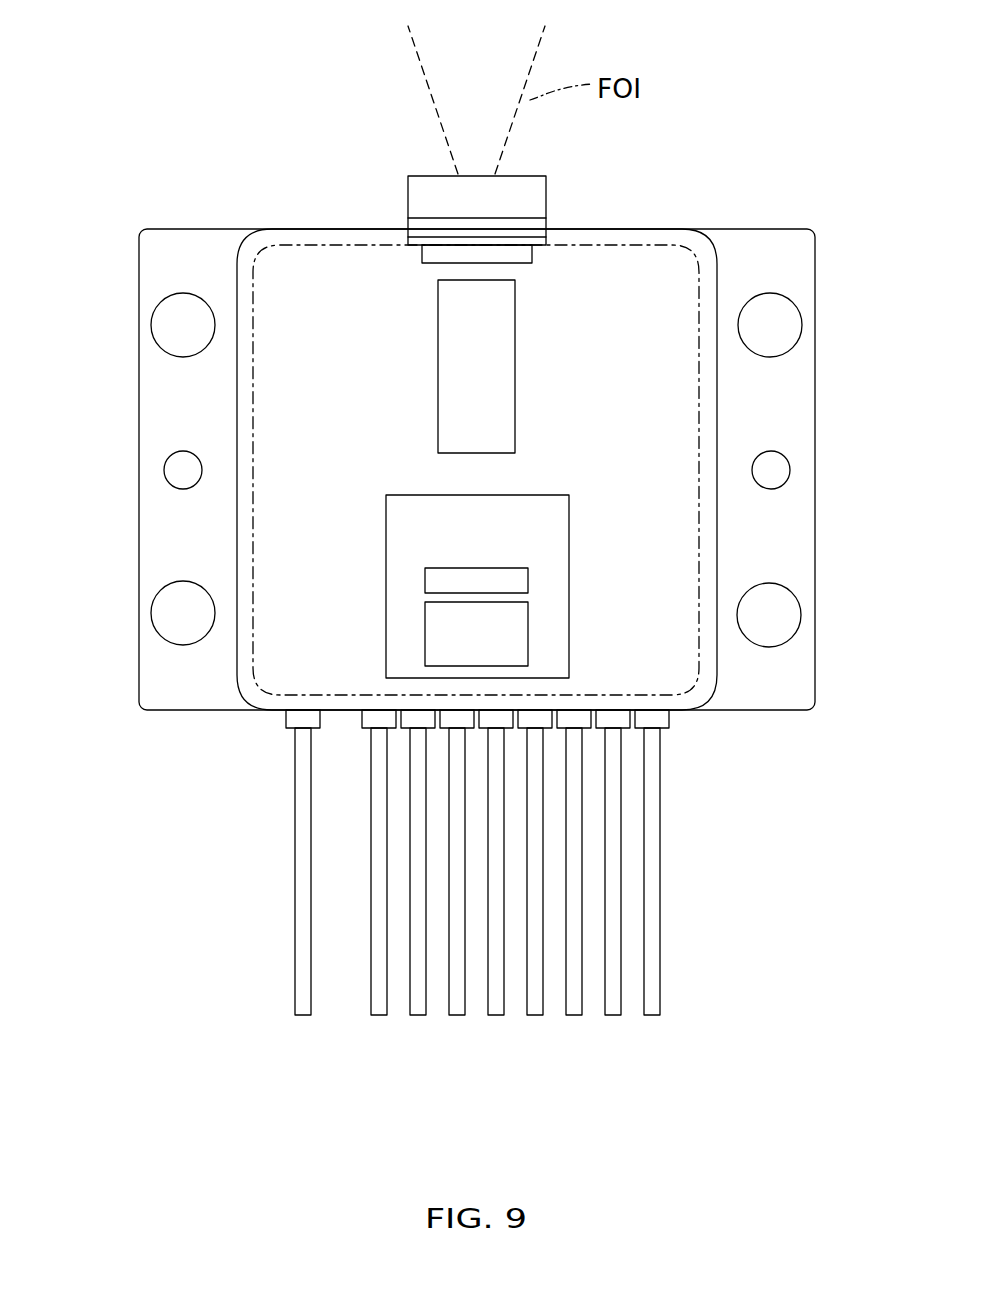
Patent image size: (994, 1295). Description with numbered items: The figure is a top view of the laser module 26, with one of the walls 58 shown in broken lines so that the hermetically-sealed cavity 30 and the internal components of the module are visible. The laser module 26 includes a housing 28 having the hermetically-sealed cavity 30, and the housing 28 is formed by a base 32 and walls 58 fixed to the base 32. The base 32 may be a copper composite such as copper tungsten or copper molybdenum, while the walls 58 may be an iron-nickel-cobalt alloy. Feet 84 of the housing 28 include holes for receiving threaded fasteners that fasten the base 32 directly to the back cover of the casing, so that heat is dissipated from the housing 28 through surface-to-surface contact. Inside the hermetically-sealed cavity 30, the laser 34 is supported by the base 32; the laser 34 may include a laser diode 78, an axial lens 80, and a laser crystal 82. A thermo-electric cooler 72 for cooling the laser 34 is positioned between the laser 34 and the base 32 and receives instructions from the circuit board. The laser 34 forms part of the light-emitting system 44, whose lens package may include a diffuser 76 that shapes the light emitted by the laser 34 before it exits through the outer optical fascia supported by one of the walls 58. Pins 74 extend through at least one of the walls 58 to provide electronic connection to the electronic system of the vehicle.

The laser module 26 is at (667, 202).
The housing 28 is at (718, 280).
The hermetically-sealed cavity 30 is at (302, 423).
The base 32 is at (302, 563).
The laser 34 is at (517, 620).
The light-emitting system 44 is at (415, 159).
The walls 58 is at (707, 407).
The thermo-electric cooler 72 is at (404, 495).
The electrical pins 74 is at (418, 1016).
The diffuser 76 is at (418, 255).
The laser diode 78 is at (425, 631).
The axial lens 80 is at (425, 580).
The laser crystal 82 is at (516, 332).
The feet 84 is at (150, 273).